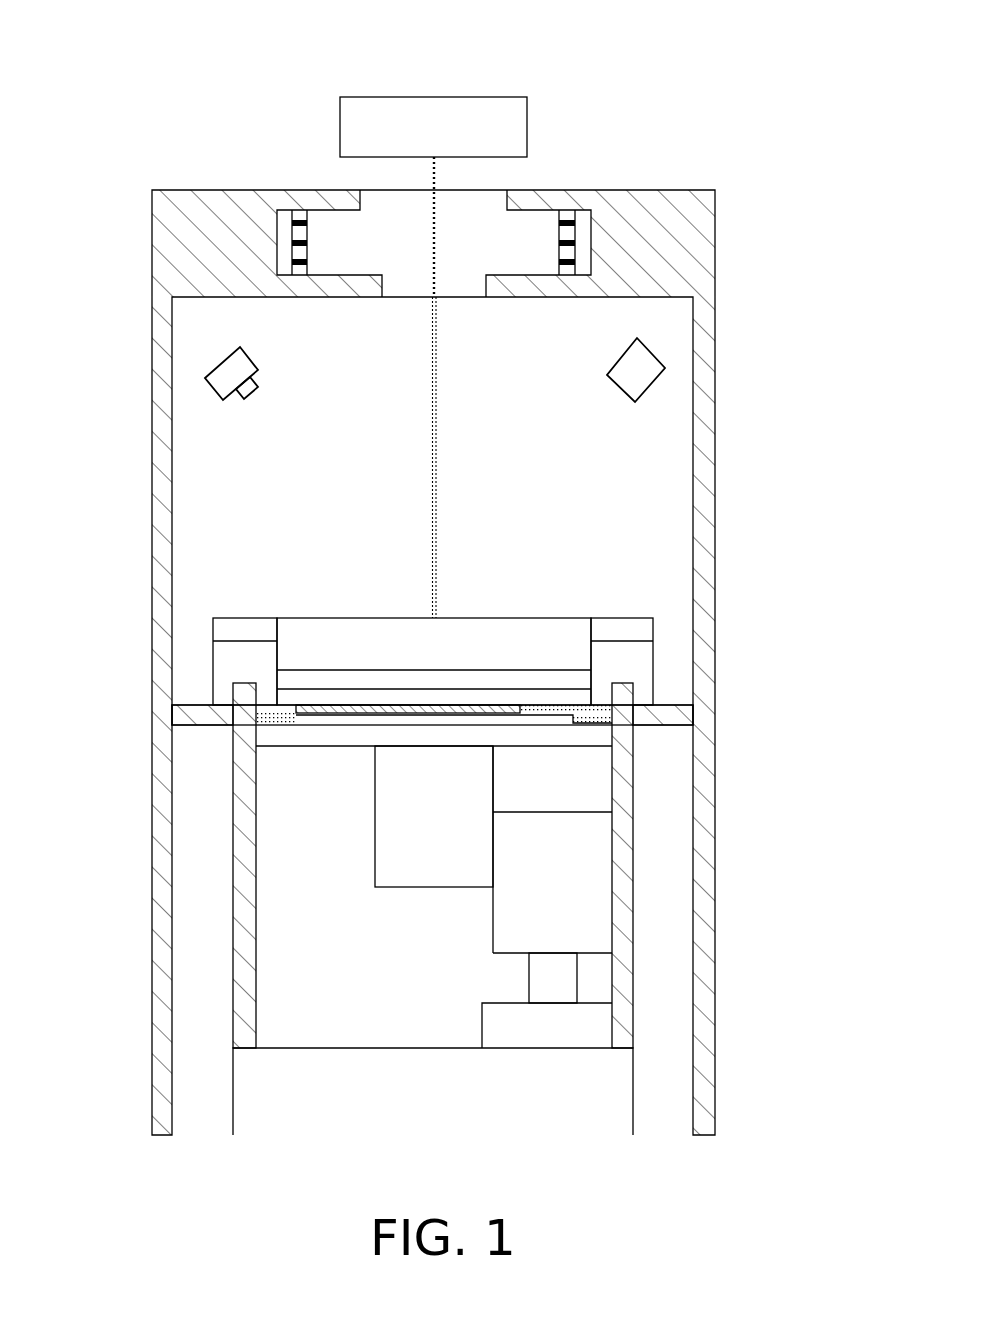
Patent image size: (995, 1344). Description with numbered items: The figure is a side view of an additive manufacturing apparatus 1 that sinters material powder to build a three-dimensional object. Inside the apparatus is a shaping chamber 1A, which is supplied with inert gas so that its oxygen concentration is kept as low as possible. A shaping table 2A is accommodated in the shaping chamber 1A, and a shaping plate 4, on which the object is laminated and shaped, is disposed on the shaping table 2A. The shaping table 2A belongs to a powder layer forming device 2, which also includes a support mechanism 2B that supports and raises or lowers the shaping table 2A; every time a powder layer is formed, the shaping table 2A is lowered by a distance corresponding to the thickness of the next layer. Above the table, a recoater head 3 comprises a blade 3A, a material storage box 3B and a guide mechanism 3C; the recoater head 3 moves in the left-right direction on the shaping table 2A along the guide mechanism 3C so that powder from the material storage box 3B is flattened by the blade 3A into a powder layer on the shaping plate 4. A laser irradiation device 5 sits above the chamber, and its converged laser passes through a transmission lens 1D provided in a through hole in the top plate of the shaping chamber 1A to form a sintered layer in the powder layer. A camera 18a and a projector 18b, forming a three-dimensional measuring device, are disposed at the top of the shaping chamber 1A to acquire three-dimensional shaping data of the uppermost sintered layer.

The additive manufacturing apparatus 1 is at (750, 202).
The shaping chamber 1A is at (229, 339).
The transmission lens 1D is at (500, 200).
The laser irradiation device 5 is at (365, 113).
The camera 18a is at (222, 383).
The projector 18b is at (640, 373).
The recoater head 3 is at (424, 594).
The blade 3A is at (452, 700).
The material storage box 3B is at (343, 650).
The guide mechanism 3C is at (244, 660).
The shaping plate 4 is at (330, 718).
The powder layer forming device 2 is at (477, 909).
The shaping table 2A is at (596, 737).
The support mechanism 2B is at (384, 856).